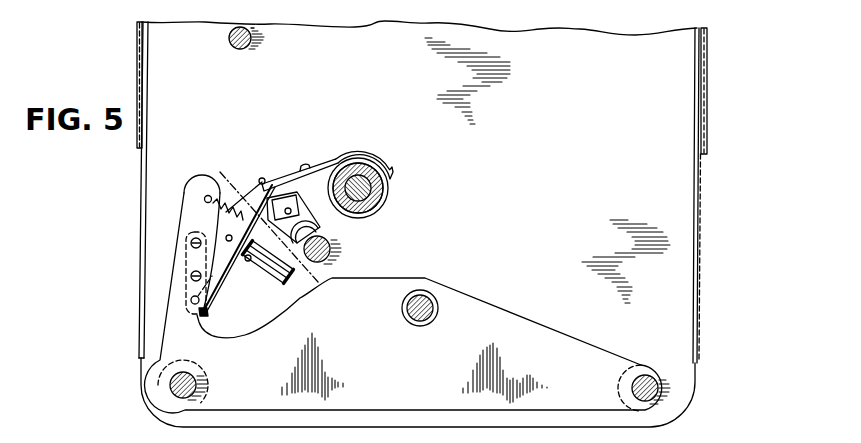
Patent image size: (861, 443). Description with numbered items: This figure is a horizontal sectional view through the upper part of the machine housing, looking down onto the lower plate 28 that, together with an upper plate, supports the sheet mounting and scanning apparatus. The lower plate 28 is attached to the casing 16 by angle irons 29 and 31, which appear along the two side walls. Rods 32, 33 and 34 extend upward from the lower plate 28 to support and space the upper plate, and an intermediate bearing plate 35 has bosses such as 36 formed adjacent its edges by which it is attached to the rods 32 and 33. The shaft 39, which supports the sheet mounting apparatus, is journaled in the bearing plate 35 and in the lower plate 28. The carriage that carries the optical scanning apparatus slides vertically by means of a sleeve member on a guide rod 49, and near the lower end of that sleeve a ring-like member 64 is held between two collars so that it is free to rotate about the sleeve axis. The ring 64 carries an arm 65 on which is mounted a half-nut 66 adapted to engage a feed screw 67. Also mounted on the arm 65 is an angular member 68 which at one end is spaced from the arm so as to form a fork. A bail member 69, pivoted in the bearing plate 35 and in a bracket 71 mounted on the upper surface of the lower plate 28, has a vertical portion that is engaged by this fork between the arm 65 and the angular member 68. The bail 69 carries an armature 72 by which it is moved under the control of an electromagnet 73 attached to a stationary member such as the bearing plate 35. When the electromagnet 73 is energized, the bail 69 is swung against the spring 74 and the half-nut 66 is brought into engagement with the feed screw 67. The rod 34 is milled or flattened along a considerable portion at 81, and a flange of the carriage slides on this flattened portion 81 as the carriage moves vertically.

The casing 16 is at (136, 84).
The lower plate 28 is at (678, 381).
The angle iron 29 is at (138, 246).
The angle iron 31 is at (703, 243).
The rod 32 is at (196, 383).
The rod 33 is at (642, 373).
The rod 34 is at (230, 42).
The intermediate bearing plate 35 is at (530, 330).
The boss 36 is at (616, 383).
The shaft 39 is at (407, 320).
The guide rod 49 is at (373, 209).
The ring-like member 64 is at (387, 184).
The arm 65 is at (357, 157).
The half-nut 66 is at (320, 222).
The feed screw 67 is at (333, 256).
The angular member 68 is at (295, 167).
The bail member 69 is at (249, 186).
The bracket 71 is at (208, 313).
The armature 72 is at (243, 262).
The electromagnet 73 is at (267, 273).
The spring 74 is at (236, 199).
The flattened portion 81 is at (253, 37).